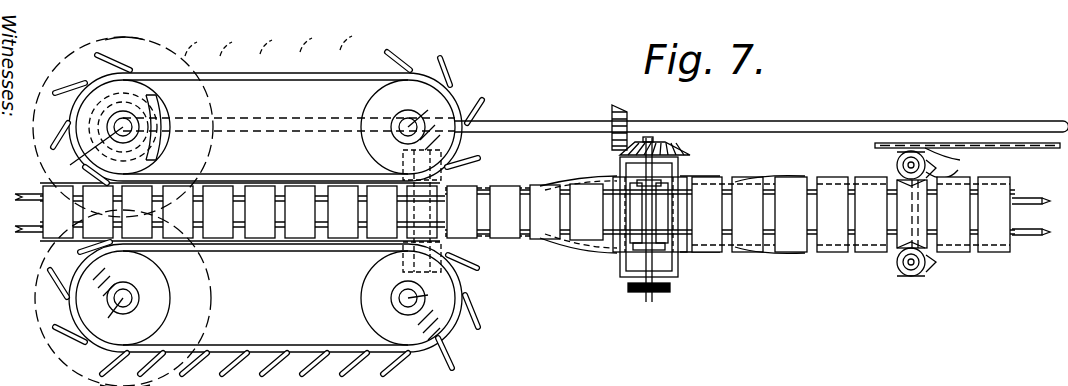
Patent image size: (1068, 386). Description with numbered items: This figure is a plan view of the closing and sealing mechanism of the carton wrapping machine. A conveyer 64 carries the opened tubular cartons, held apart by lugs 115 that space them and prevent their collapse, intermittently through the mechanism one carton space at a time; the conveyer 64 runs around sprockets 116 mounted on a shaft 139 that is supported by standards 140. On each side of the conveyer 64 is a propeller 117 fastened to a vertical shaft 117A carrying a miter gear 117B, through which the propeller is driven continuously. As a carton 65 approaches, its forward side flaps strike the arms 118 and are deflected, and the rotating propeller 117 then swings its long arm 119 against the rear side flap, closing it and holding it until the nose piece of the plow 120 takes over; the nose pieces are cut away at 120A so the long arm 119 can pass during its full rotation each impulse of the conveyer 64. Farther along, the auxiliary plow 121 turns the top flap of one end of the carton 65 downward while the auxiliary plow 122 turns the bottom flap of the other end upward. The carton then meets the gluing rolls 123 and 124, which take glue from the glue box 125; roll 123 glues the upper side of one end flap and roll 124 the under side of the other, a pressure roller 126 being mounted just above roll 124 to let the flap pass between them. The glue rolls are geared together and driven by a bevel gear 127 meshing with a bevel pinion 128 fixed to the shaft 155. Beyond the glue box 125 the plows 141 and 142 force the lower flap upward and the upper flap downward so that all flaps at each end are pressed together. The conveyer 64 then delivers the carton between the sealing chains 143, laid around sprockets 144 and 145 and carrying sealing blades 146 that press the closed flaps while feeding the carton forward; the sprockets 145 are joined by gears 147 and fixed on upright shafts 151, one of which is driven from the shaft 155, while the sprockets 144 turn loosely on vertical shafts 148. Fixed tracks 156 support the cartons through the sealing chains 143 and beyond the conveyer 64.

The conveyer 64 is at (1038, 207).
The carton 65 is at (1000, 200).
The lugs 115 is at (1018, 231).
The sprockets 116 is at (472, 192).
The propellers 117 is at (905, 152).
The vertical shaft 117A is at (928, 150).
The miter gear 117B is at (930, 160).
The arms 118 is at (912, 150).
The long arm 119 is at (930, 170).
The plows 120 is at (850, 182).
The cut-away 120A is at (892, 252).
The auxiliary plow 121 is at (790, 252).
The auxiliary plow 122 is at (785, 178).
The gluing roll 123 is at (666, 250).
The gluing roll 124 is at (662, 186).
The glue box 125 is at (622, 270).
The pressure roller 126 is at (680, 178).
The bevel gear 127 is at (690, 150).
The bevel pinion 128 is at (627, 114).
The shaft 139 is at (412, 219).
The standards 140 is at (470, 175).
The plow 141 is at (585, 250).
The plow 142 is at (585, 180).
The sealing chains 143 is at (296, 183).
The sprockets 144 is at (408, 212).
The sprockets 145 is at (170, 112).
The sealing blades 146 is at (412, 58).
The gears 147 is at (44, 174).
The vertical shafts 148 is at (435, 204).
The upright shafts 151 is at (252, 227).
The shaft 155 is at (524, 131).
The tracks 156 is at (21, 213).